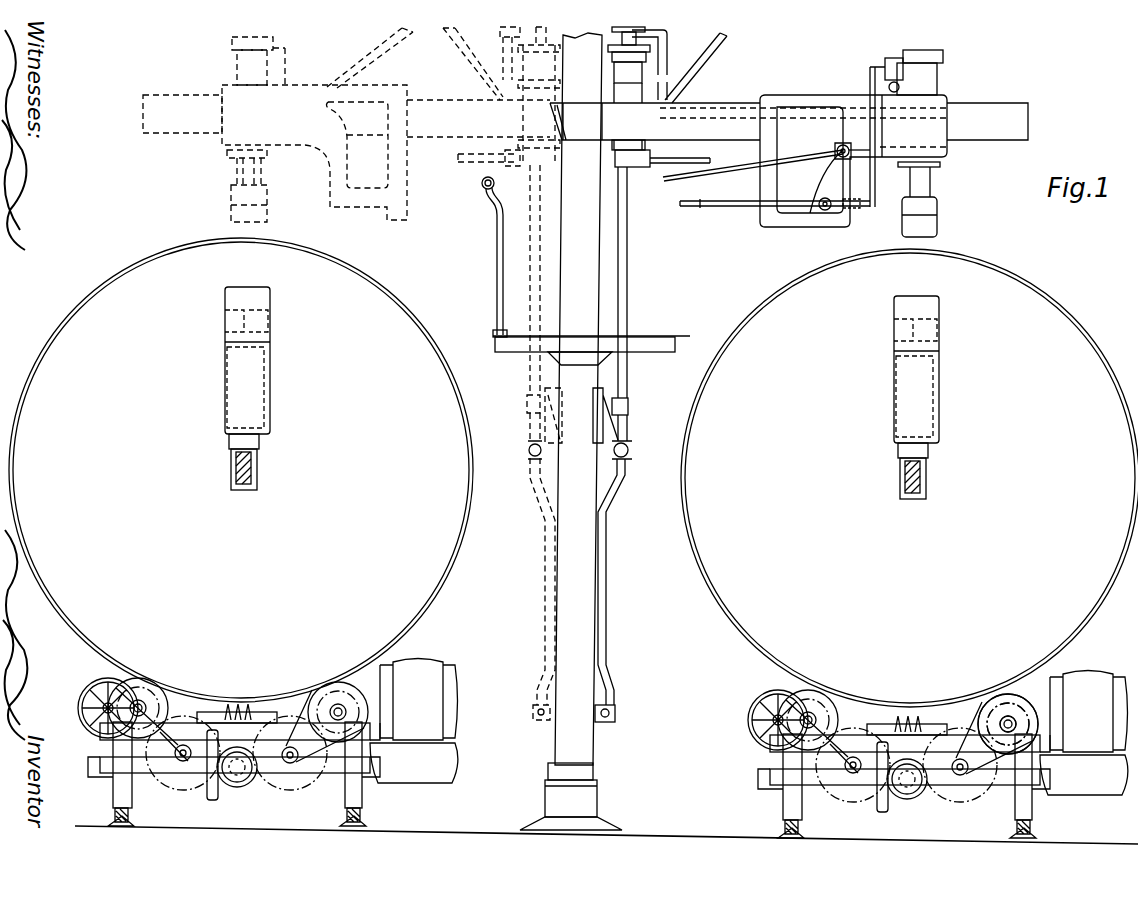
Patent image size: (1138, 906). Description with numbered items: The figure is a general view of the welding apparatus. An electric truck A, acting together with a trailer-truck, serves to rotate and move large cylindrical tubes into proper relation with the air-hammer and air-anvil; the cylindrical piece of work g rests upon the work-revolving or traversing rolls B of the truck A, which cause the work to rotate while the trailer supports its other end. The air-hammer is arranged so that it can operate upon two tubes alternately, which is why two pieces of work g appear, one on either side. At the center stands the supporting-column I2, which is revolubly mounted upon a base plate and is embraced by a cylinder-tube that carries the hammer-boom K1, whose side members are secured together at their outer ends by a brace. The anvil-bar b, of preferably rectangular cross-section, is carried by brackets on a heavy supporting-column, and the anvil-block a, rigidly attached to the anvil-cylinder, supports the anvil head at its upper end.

The cylindrical piece of work g is at (446, 578).
The anvil-block a is at (268, 322).
The anvil-bar b is at (251, 466).
The truck A is at (100, 735).
The work-revolving or traversing rolls B is at (1008, 700).
The hammer-boom K1 is at (1028, 128).
The supporting-column I2 is at (612, 464).